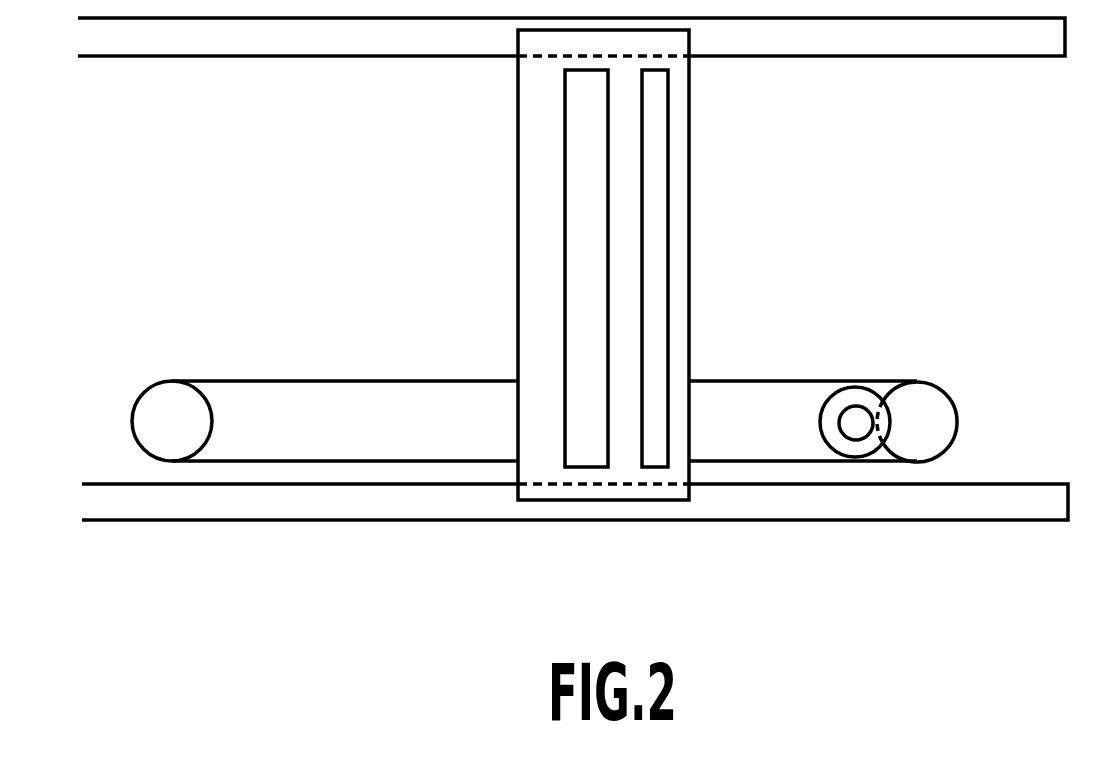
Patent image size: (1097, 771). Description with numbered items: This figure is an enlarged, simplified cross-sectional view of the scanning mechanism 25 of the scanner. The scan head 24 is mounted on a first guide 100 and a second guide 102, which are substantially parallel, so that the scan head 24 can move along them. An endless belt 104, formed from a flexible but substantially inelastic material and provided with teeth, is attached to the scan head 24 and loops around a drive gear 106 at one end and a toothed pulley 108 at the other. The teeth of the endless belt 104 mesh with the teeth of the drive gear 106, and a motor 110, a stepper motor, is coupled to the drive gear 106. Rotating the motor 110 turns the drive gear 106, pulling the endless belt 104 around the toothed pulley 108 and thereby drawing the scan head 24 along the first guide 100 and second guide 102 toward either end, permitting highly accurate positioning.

The first guide 100 is at (213, 57).
The second guide 102 is at (920, 520).
The scan head 24 is at (690, 238).
The endless belt 104 is at (283, 381).
The drive gear 106 is at (953, 406).
The toothed pulley 108 is at (165, 381).
The motor 110 is at (821, 420).
The scanning mechanism 25 is at (388, 540).